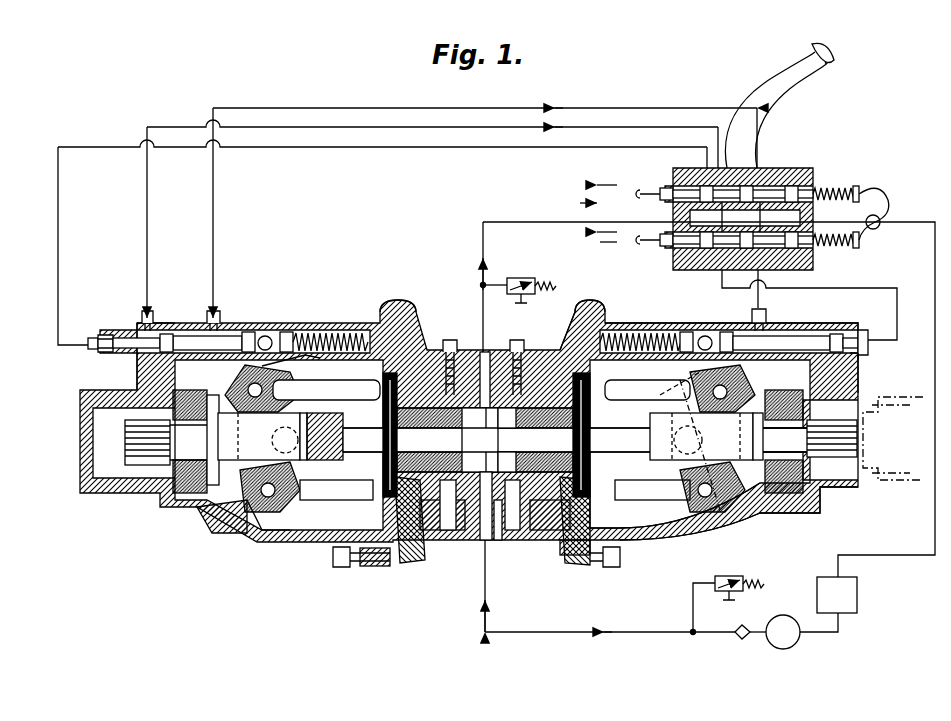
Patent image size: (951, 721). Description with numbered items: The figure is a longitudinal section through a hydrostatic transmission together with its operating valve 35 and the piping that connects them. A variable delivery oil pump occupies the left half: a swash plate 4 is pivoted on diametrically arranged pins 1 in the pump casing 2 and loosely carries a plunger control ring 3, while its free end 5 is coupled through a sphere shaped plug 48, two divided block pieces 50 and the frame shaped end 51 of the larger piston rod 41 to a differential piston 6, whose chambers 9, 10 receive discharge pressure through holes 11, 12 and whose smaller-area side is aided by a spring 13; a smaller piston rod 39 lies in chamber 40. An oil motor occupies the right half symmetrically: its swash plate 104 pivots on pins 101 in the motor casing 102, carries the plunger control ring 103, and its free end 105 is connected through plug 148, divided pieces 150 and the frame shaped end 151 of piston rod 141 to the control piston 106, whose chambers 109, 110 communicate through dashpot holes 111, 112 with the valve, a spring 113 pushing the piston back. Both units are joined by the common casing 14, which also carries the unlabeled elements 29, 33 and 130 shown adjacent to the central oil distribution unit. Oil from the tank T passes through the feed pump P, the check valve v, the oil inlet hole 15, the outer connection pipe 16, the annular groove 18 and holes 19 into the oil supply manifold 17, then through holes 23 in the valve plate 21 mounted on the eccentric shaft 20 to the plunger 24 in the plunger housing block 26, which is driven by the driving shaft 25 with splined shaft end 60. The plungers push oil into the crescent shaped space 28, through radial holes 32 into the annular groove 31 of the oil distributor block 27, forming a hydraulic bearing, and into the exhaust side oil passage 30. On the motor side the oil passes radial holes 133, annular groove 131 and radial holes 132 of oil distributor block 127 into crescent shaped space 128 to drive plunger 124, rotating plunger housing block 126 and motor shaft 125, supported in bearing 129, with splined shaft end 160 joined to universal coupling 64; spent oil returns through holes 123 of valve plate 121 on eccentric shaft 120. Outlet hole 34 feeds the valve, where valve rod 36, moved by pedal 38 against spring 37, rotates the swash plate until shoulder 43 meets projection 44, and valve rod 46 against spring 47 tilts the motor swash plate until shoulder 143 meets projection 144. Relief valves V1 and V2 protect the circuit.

The pin 1 is at (272, 440).
The pump casing 2 is at (270, 542).
The plunger control ring 3 is at (272, 482).
The swash plate 4 is at (296, 542).
The free end 5 is at (305, 362).
The differential piston 6 is at (154, 322).
The chamber 9 is at (175, 333).
The chamber 10 is at (150, 360).
The hole 11 is at (222, 322).
The hole 12 is at (140, 322).
The spring 13 is at (322, 330).
The common casing 14 is at (512, 530).
The oil inlet hole 15 is at (498, 534).
The outer connection pipe 16 is at (478, 530).
The oil supply manifold 17 is at (478, 360).
The annular groove 18 is at (482, 455).
The hole 19 is at (497, 440).
The shaft 20 is at (326, 390).
The valve plate 21 is at (395, 312).
The hole 23 is at (347, 567).
The plunger 24 is at (325, 500).
The driving shaft 25 is at (215, 518).
The plunger housing block 26 is at (340, 542).
The oil distributor block 27 is at (414, 555).
The crescent shaped space 28 is at (440, 530).
The bearing 29 is at (185, 494).
The exhaust side oil passage 30 is at (447, 352).
The annular groove 31 is at (576, 440).
The radial hole 32 is at (448, 530).
The sleeve 33 is at (428, 428).
The outlet hole 34 is at (488, 345).
The operating valve 35 is at (800, 168).
The valve rod 36 is at (648, 190).
The spring 37 is at (850, 186).
The pedal 38 is at (822, 66).
The piston rod 39 is at (116, 334).
The chamber 40 is at (98, 350).
The piston rod 41 is at (205, 335).
The shoulder 43 is at (252, 535).
The projection 44 is at (215, 462).
The valve rod 46 is at (660, 248).
The spring 47 is at (848, 248).
The sphere shaped plug 48 is at (267, 336).
The divided block piece 50 is at (252, 331).
The frame shaped end 51 is at (288, 331).
The splined shaft end 60 is at (140, 470).
The universal coupling 64 is at (915, 480).
The pin 101 is at (698, 437).
The motor casing 102 is at (696, 542).
The plunger control ring 103 is at (693, 480).
The swash plate 104 is at (678, 530).
The free end 105 is at (712, 380).
The control piston 106 is at (832, 325).
The chamber 109 is at (832, 360).
The chamber 110 is at (867, 330).
The dashpot hole 111 is at (766, 322).
The dashpot hole 112 is at (866, 347).
The spring 113 is at (640, 330).
The eccentric shaft 120 is at (645, 390).
The valve plate 121 is at (568, 340).
The hole 123 is at (588, 312).
The plunger 124 is at (650, 500).
The motor shaft 125 is at (736, 460).
The plunger housing block 126 is at (615, 567).
The oil distributor block 127 is at (592, 565).
The crescent shaped space 128 is at (570, 553).
The bearing 129 is at (812, 507).
The bolt 130 is at (517, 352).
The annular groove 131 is at (546, 452).
The radial hole 132 is at (548, 530).
The radial hole 133 is at (517, 440).
The piston rod 141 is at (793, 334).
The shoulder 143 is at (740, 520).
The projection 144 is at (775, 513).
The sphere shaped plug 148 is at (708, 335).
The divided piece 150 is at (722, 330).
The frame shaped end 151 is at (686, 330).
The splined shaft end 160 is at (858, 440).
The high pressure relief valve V1 is at (519, 282).
The low pressure relief valve V2 is at (739, 577).
The oil tank T is at (837, 595).
The feed pump P is at (783, 632).
The check valve v is at (737, 625).